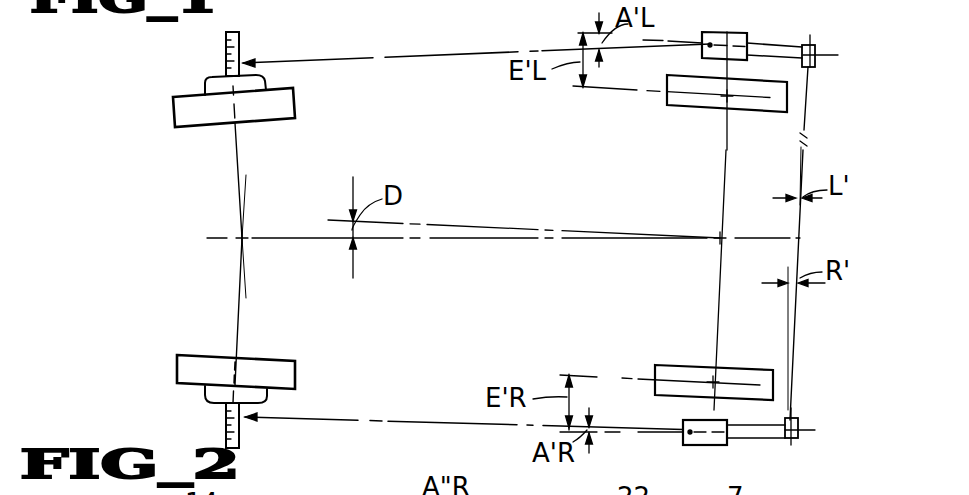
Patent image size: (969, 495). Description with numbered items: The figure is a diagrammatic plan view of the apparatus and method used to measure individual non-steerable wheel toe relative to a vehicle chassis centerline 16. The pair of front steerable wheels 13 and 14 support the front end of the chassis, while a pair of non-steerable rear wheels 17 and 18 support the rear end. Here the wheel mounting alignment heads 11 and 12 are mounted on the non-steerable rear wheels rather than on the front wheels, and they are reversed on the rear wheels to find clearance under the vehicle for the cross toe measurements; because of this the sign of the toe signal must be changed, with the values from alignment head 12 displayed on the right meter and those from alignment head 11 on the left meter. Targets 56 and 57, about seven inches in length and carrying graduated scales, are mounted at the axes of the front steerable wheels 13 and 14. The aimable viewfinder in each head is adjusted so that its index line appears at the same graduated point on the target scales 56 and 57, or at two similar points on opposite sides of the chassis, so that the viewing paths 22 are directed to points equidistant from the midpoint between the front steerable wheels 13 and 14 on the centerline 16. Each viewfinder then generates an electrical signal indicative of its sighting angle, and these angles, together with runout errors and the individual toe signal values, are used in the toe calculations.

The alignment head 11 is at (723, 442).
The alignment head 12 is at (742, 37).
The front steerable wheel 13 is at (180, 119).
The front steerable wheel 14 is at (180, 367).
The centerline 16 is at (293, 238).
The non-steerable rear wheel 17 is at (680, 105).
The non-steerable rear wheel 18 is at (682, 367).
The viewing path 22 is at (400, 59).
The target 56 is at (226, 55).
The target 57 is at (225, 427).